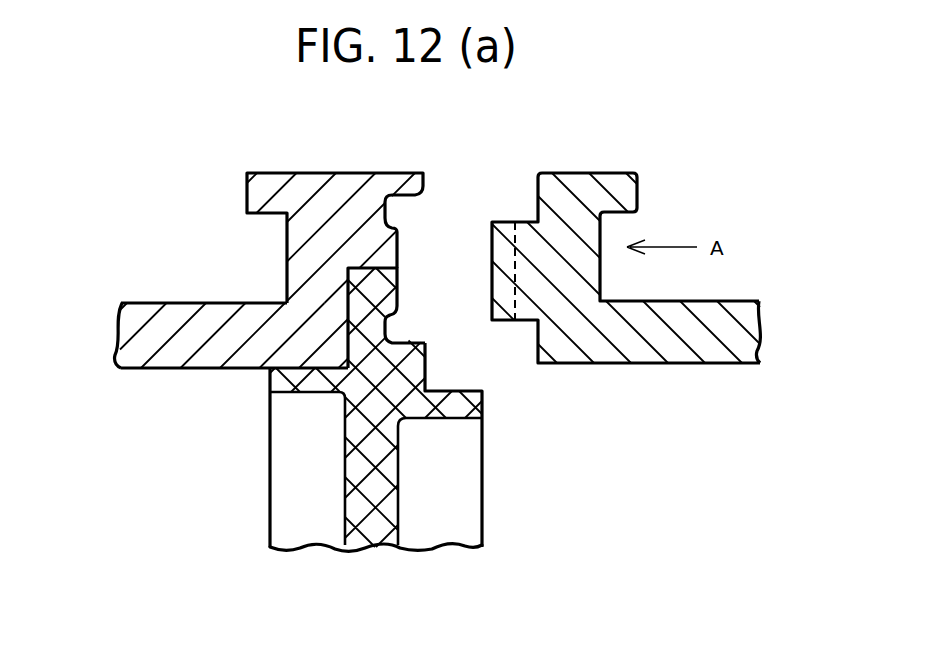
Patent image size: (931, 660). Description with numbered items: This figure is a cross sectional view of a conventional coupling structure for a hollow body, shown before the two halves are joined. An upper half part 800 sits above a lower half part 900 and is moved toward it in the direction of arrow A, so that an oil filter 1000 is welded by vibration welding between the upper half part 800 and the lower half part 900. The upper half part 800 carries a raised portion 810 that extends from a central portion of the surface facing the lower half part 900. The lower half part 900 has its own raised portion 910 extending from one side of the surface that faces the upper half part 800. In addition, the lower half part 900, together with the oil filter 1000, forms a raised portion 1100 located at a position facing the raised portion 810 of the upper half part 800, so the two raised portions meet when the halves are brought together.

The raised portion 910 is at (330, 172).
The lower half part 900 is at (130, 364).
The raised portion 1100 is at (373, 268).
The oil filter 1000 is at (402, 523).
The upper half part 800 is at (752, 350).
The raised portion 810 is at (500, 232).